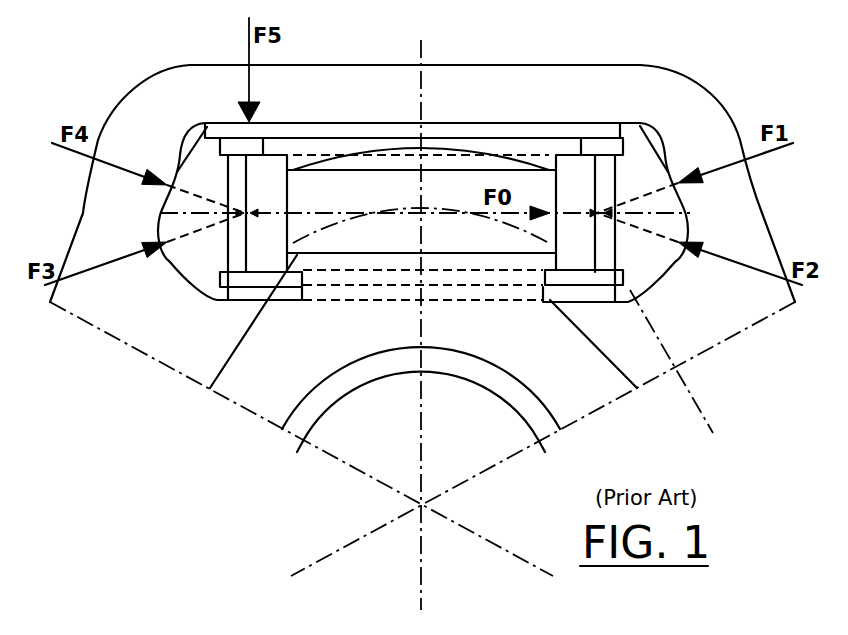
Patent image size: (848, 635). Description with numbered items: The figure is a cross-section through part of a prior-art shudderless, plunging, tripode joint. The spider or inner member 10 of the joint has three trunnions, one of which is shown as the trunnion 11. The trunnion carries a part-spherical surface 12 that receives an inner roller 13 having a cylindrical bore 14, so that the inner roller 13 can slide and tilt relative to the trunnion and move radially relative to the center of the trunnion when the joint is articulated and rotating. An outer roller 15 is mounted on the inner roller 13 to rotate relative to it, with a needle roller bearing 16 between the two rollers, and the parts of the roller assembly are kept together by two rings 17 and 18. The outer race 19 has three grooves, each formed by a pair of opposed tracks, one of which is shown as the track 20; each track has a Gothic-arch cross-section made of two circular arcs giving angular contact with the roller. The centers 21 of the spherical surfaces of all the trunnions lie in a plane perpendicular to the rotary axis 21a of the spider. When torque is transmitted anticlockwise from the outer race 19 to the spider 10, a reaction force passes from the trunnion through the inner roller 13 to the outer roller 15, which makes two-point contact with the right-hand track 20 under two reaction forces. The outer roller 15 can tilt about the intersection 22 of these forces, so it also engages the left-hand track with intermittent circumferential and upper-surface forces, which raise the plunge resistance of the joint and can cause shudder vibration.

The spider 10 is at (570, 385).
The trunnion 11 is at (450, 187).
The part-spherical surface 12 is at (198, 125).
The inner roller 13 is at (268, 250).
The cylindrical bore 14 is at (288, 246).
The outer roller 15 is at (200, 257).
The needle roller bearing 16 is at (238, 250).
The ring 17 is at (605, 150).
The ring 18 is at (600, 285).
The outer race 19 is at (668, 107).
The track 20 is at (652, 262).
The center of spherical surface 21 is at (421, 213).
The rotary axis 21a is at (423, 507).
The intersection 22 is at (603, 262).